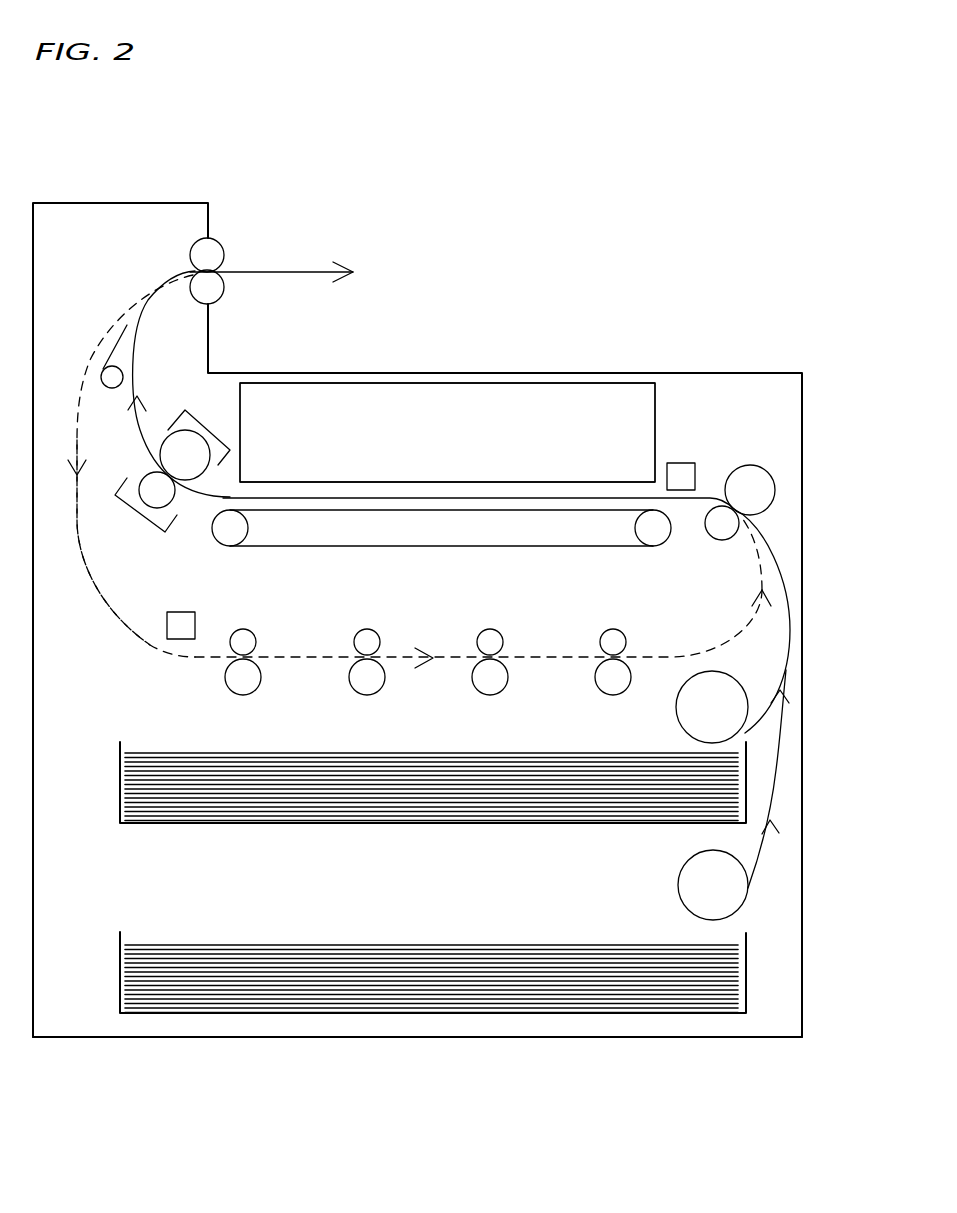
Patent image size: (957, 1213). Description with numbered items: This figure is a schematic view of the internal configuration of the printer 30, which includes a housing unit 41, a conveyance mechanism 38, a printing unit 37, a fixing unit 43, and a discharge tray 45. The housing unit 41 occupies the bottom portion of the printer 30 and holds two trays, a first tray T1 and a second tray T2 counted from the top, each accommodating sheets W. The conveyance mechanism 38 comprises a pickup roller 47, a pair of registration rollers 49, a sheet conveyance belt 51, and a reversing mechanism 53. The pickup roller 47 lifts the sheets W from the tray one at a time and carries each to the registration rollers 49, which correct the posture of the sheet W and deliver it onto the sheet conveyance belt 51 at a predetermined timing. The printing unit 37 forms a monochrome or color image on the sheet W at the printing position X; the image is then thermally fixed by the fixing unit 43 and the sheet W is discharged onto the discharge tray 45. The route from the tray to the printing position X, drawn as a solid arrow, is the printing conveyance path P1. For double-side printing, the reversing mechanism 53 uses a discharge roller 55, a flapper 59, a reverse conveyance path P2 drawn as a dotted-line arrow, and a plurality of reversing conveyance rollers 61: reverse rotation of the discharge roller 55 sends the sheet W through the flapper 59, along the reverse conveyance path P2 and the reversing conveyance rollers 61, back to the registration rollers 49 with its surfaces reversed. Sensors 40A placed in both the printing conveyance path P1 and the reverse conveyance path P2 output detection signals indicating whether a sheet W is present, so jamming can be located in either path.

The printer 30 is at (465, 212).
The printing unit 37 is at (567, 396).
The conveyance mechanism 38 is at (136, 645).
The sensors 40A is at (182, 625).
The housing unit 41 is at (46, 907).
The fixing unit 43 is at (138, 517).
The discharge tray 45 is at (492, 372).
The pickup roller 47 is at (700, 715).
The registration rollers 49 is at (718, 506).
The sheet conveyance belt 51 is at (537, 535).
The reversing mechanism 53 is at (80, 572).
The discharge roller 55 is at (218, 292).
The flapper 59 is at (112, 366).
The reversing conveyance rollers 61 is at (230, 665).
The printing conveyance path P1 is at (538, 497).
The reverse conveyance path P2 is at (77, 518).
The printing position X is at (465, 495).
The sheets W is at (312, 762).
The first tray T1 is at (120, 780).
The second tray T2 is at (120, 968).